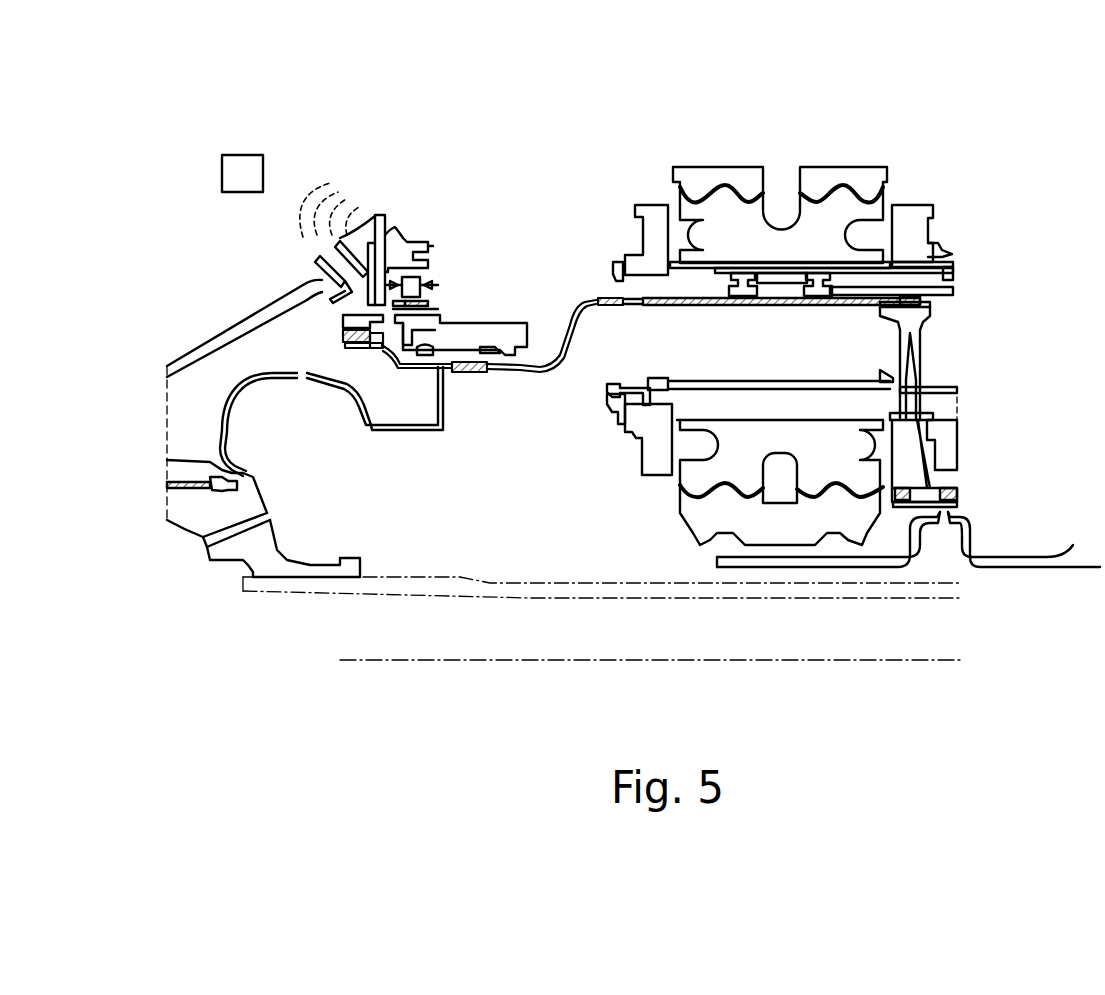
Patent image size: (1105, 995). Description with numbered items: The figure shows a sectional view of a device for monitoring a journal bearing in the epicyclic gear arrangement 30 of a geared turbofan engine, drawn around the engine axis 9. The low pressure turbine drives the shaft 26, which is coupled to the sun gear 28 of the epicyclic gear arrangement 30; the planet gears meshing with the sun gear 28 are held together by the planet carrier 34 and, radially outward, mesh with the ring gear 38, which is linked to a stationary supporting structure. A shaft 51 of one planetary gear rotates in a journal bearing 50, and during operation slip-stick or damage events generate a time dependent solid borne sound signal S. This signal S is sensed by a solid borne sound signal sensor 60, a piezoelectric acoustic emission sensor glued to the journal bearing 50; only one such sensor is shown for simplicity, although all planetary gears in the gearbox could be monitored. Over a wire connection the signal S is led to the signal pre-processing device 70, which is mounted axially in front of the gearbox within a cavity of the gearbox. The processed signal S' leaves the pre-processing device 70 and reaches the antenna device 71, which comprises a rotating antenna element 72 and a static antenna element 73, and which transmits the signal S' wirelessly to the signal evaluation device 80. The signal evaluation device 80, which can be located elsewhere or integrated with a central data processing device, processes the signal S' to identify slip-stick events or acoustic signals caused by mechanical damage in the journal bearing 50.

The engine axis 9 is at (470, 660).
The shaft 26 is at (835, 565).
The sun gear 28 is at (718, 522).
The epicyclic gear arrangement 30 is at (650, 508).
The planet carrier 34 is at (655, 227).
The ring gear 38 is at (868, 205).
The journal bearing 50 is at (715, 283).
The shaft 51 is at (880, 333).
The solid borne sound signal sensor 60 is at (608, 307).
The signal pre-processing device 70 is at (465, 373).
The antenna device 71 is at (333, 335).
The rotating antenna element 72 is at (362, 348).
The static antenna element 73 is at (370, 272).
The signal evaluation device 80 is at (243, 167).
The solid borne sound signal S is at (489, 384).
The processed signal S' is at (289, 294).